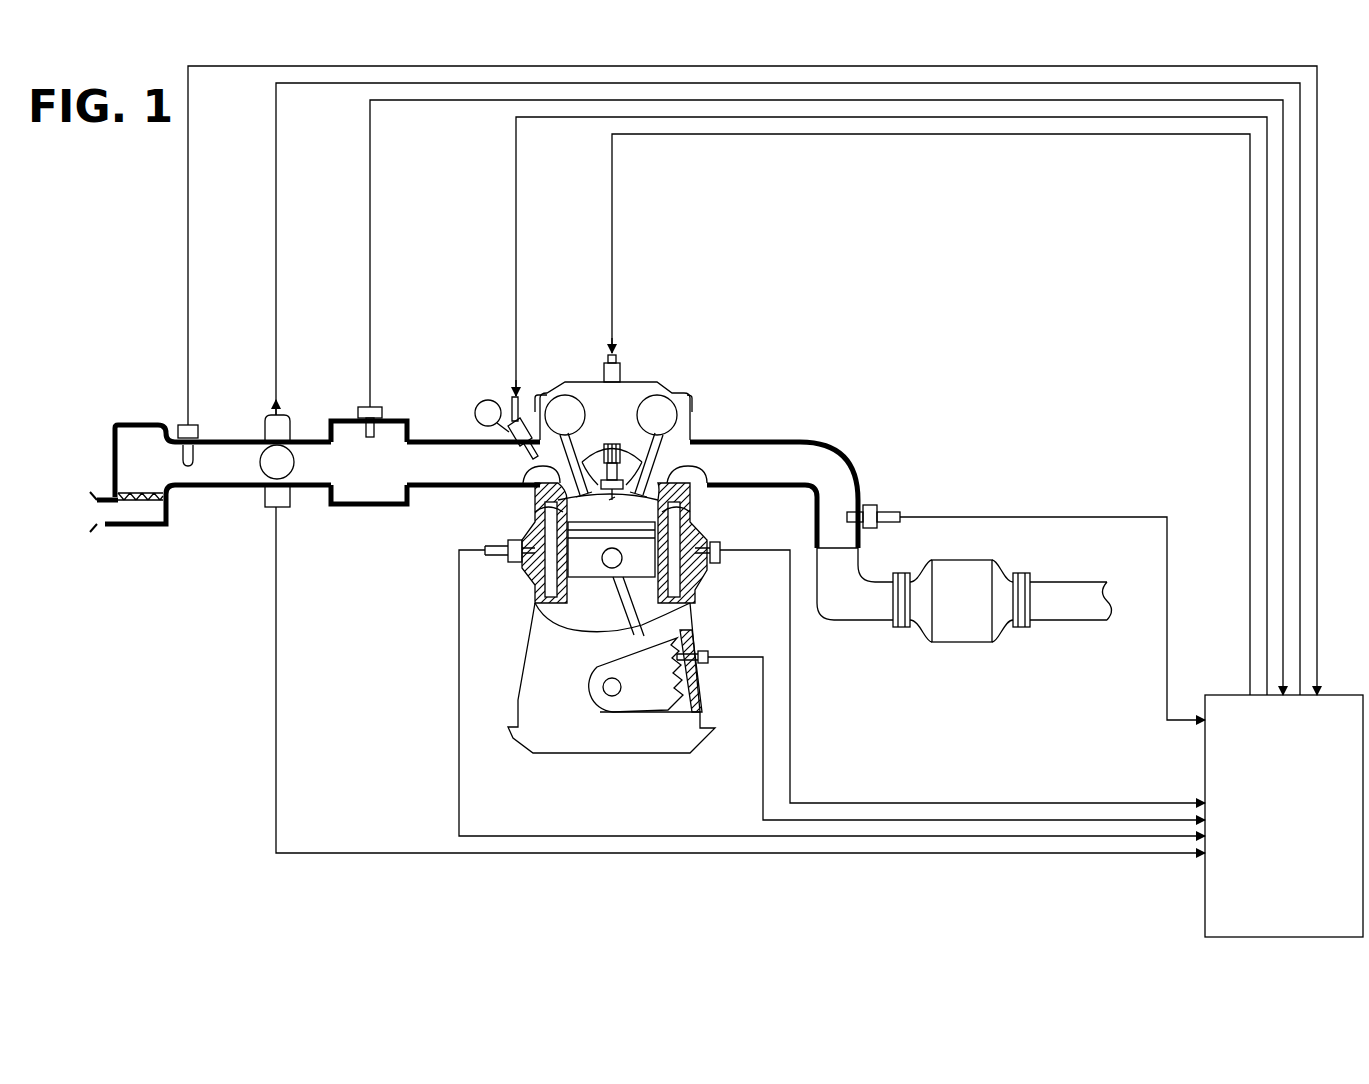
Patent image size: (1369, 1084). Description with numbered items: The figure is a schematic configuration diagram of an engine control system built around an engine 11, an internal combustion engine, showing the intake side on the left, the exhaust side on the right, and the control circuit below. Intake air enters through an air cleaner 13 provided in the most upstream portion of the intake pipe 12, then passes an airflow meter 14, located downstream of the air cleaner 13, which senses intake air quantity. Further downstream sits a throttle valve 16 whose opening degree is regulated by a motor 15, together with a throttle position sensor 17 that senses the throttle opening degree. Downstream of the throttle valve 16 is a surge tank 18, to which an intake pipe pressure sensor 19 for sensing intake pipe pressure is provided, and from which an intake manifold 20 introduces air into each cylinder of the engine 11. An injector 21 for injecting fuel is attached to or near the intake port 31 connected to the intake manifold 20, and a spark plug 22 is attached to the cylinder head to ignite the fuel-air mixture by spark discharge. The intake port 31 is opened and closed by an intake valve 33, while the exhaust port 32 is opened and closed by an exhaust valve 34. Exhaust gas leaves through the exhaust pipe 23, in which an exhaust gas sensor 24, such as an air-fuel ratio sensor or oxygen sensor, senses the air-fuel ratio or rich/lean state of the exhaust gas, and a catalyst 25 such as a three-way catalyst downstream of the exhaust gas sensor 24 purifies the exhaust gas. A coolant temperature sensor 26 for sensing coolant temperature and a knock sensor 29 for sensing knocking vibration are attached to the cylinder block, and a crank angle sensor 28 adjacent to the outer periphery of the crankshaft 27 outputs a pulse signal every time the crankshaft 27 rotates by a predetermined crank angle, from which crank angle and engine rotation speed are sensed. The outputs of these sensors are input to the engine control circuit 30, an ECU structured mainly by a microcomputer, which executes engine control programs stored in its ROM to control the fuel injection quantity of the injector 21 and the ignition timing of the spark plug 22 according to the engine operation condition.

The engine 11 is at (665, 380).
The intake pipe 12 is at (228, 440).
The air cleaner 13 is at (135, 500).
The airflow meter 14 is at (183, 425).
The motor 15 is at (262, 418).
The throttle valve 16 is at (262, 488).
The throttle position sensor 17 is at (290, 507).
The surge tank 18 is at (380, 507).
The intake pipe pressure sensor 19 is at (358, 412).
The intake manifold 20 is at (446, 440).
The injector 21 is at (520, 402).
The spark plug 22 is at (628, 470).
The exhaust pipe 23 is at (800, 440).
The exhaust gas sensor 24 is at (870, 505).
The catalyst 25 is at (962, 560).
The coolant temperature sensor 26 is at (514, 562).
The crankshaft 27 is at (612, 697).
The crank angle sensor 28 is at (715, 665).
The knock sensor 29 is at (718, 563).
The engine control circuit 30 is at (1205, 888).
The intake port 31 is at (528, 475).
The exhaust port 32 is at (700, 475).
The intake valve 33 is at (545, 515).
The exhaust valve 34 is at (680, 515).